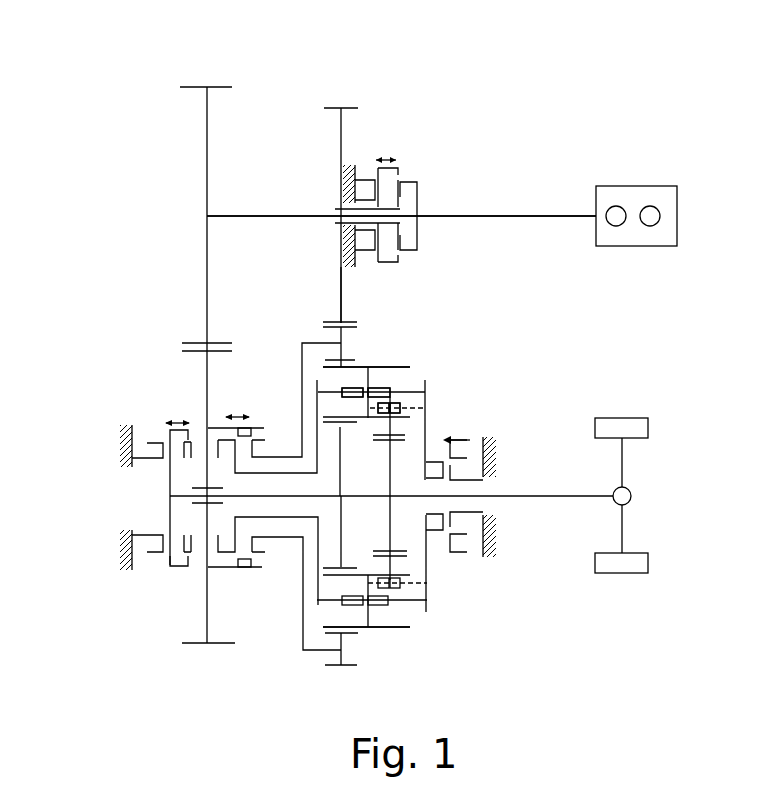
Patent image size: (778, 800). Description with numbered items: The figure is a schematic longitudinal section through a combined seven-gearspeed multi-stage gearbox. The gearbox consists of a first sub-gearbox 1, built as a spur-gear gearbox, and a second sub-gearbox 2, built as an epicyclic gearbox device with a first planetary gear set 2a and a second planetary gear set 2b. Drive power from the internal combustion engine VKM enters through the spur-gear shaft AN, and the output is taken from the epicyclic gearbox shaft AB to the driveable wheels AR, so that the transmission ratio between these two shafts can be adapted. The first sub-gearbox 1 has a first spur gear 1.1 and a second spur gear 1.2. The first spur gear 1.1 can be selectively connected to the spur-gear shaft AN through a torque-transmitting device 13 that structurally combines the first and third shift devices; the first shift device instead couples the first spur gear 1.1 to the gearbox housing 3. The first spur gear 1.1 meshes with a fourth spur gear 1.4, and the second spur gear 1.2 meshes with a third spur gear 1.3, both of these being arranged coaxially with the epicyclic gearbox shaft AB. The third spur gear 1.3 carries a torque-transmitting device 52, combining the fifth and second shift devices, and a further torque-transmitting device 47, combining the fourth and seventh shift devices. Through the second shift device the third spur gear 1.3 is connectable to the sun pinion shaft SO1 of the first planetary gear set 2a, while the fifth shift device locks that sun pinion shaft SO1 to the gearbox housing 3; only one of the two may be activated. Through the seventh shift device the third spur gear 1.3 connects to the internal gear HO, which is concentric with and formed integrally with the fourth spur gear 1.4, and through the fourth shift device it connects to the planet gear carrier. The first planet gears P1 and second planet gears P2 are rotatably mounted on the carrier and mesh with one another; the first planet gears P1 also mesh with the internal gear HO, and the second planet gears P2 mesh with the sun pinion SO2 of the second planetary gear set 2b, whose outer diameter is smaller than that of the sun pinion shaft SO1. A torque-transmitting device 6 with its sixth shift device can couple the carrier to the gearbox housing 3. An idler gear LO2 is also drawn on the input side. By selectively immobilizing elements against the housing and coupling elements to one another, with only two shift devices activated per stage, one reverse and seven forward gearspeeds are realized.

The first sub-gearbox 1 is at (165, 166).
The first spur gear 1.1 is at (343, 124).
The second spur gear 1.2 is at (207, 118).
The third spur gear 1.3 is at (205, 377).
The fourth spur gear 1.4 is at (351, 340).
The torque-transmitting device 13 is at (423, 170).
The gearbox housing 3 is at (343, 236).
The torque-transmitting device 6 is at (450, 418).
The torque-transmitting device 47 is at (255, 442).
The torque-transmitting device 52 is at (160, 430).
The second sub-gearbox 2 is at (501, 597).
The first planetary gear set 2a is at (341, 668).
The second planetary gear set 2b is at (420, 628).
The internal gear HO is at (350, 357).
The first planet gears P1 is at (400, 368).
The second planet gears P2 is at (400, 384).
The sun pinion shaft SO1 is at (347, 503).
The sun pinion SO2 is at (388, 448).
The idler gear LO2 is at (359, 294).
The spur-gear shaft AN is at (540, 212).
The internal combustion engine VKM is at (636, 186).
The epicyclic gearbox shaft AB is at (540, 495).
The driveable wheels AR is at (631, 497).